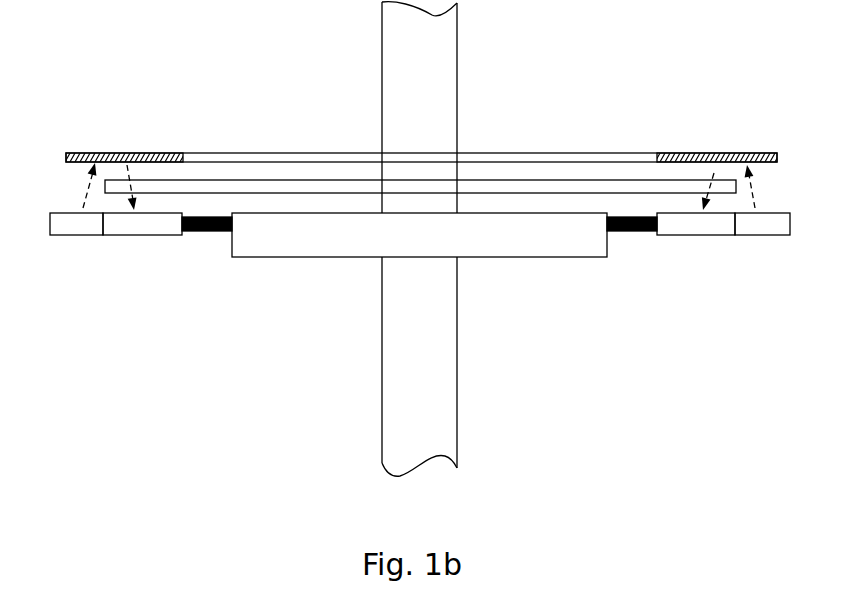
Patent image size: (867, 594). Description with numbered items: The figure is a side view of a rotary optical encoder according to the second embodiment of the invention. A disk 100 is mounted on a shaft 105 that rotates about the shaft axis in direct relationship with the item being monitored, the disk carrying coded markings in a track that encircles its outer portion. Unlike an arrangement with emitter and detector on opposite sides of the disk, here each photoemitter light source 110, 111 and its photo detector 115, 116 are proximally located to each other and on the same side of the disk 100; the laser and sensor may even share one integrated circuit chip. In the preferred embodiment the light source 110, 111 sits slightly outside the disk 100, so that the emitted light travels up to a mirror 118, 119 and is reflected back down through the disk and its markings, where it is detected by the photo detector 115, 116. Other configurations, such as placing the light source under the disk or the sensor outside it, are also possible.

The disk 100 is at (205, 180).
The shaft 105 is at (457, 96).
The photoemitter light source 110 is at (77, 236).
The photoemitter light source 111 is at (763, 236).
The photo detector 115 is at (145, 236).
The photo detector 116 is at (698, 236).
The mirror 118 is at (97, 153).
The mirror 119 is at (735, 153).